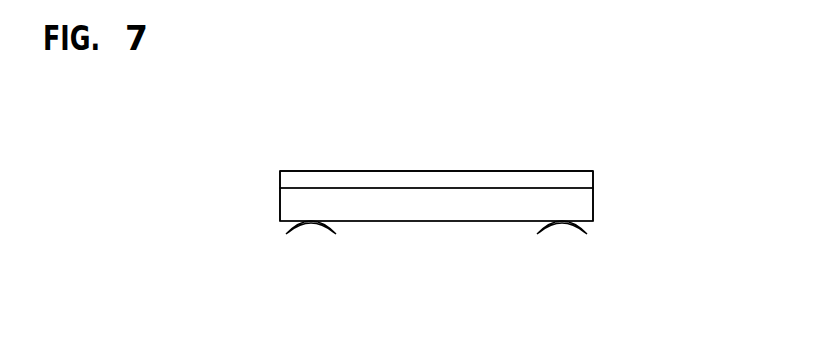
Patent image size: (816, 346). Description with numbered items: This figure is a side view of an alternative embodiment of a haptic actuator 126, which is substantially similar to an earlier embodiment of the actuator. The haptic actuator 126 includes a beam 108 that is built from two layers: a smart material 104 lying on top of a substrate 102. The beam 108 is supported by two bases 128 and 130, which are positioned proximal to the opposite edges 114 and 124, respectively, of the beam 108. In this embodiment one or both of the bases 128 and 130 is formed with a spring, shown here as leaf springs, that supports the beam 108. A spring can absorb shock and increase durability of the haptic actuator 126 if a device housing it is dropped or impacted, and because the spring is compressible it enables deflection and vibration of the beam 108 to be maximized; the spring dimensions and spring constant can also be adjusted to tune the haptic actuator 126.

The haptic actuator 126 is at (572, 122).
The beam 108 is at (372, 171).
The smart material 104 is at (593, 178).
The substrate 102 is at (593, 200).
The edge 124 is at (593, 207).
The edge 114 is at (280, 196).
The base 128 is at (323, 227).
The base 130 is at (550, 228).